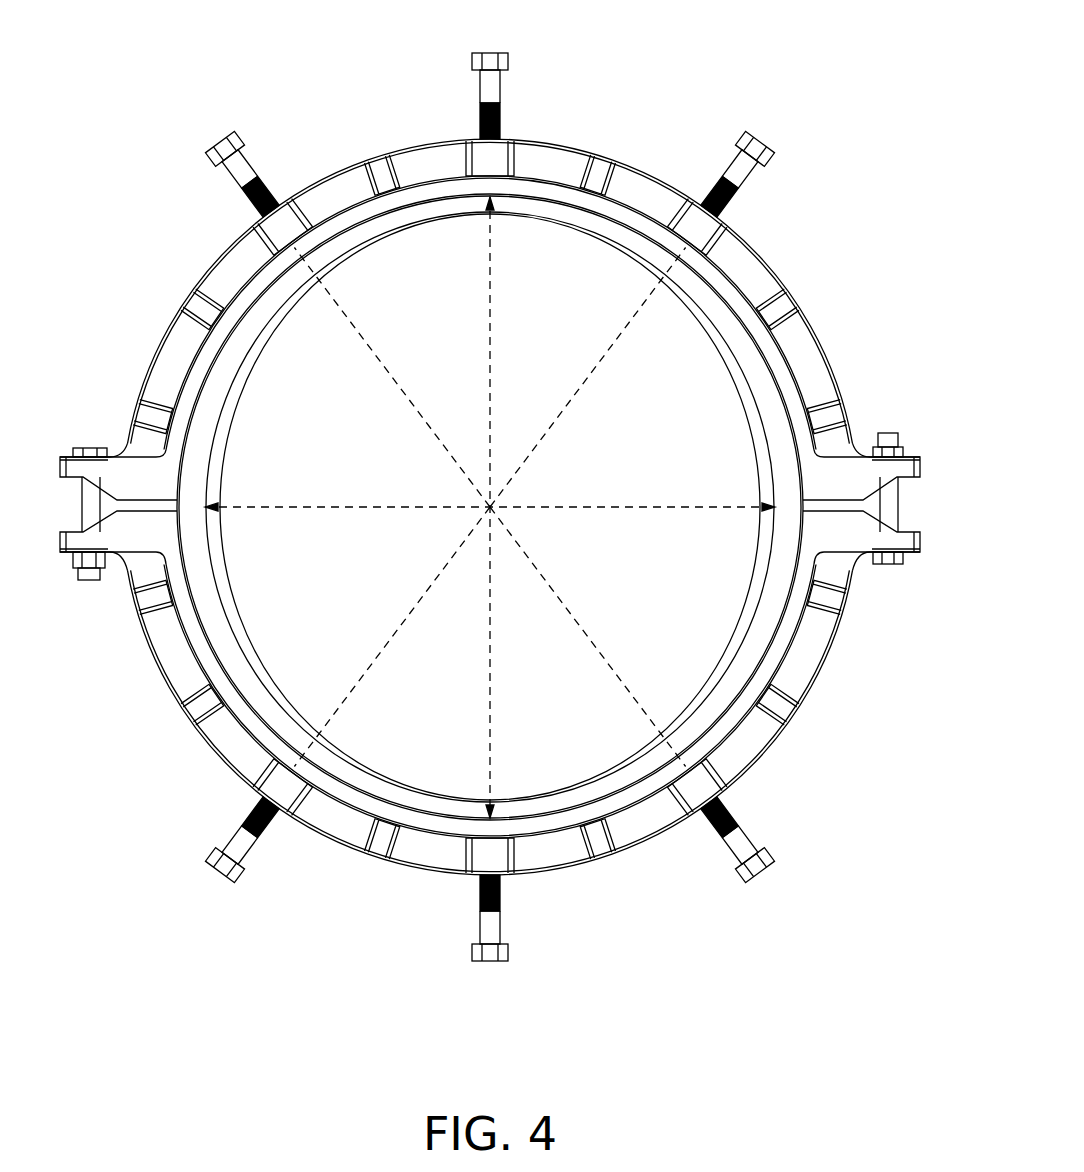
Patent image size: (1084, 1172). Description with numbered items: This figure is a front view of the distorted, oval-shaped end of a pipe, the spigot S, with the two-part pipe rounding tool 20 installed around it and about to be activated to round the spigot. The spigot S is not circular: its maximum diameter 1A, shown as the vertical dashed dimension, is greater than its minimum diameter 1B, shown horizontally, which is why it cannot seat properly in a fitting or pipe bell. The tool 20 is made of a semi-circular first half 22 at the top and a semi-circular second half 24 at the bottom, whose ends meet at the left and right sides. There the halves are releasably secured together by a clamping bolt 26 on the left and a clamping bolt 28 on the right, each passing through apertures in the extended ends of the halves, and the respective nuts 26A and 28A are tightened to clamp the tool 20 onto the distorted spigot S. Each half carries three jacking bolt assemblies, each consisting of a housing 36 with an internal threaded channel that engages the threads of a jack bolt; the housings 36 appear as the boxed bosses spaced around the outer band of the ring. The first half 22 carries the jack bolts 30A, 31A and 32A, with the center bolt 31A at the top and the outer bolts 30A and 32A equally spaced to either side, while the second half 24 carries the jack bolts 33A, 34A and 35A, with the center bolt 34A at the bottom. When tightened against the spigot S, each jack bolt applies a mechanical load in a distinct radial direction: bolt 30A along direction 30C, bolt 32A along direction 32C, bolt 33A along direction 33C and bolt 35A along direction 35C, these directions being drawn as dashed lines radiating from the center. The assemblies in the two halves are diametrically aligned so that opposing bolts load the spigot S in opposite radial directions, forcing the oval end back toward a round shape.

The pipe rounding tool 20 is at (660, 116).
The semi-circular first half 22 is at (785, 265).
The semi-circular second half 24 is at (805, 748).
The clamping bolt 26 is at (83, 500).
The nut 26A is at (80, 557).
The clamping bolt 28 is at (898, 510).
The nut 28A is at (895, 452).
The jack bolt 30A is at (240, 167).
The jack bolt 31A is at (490, 90).
The jack bolt 32A is at (738, 170).
The jack bolt 33A is at (242, 845).
The jack bolt 34A is at (500, 933).
The jack bolt 35A is at (743, 845).
The radial direction 30C is at (410, 401).
The radial direction 32C is at (572, 400).
The radial direction 33C is at (409, 615).
The radial direction 35C is at (575, 620).
The housing 36 is at (490, 158).
The distorted spigot S is at (765, 398).
The maximum diameter 1A is at (491, 632).
The minimum diameter 1B is at (610, 505).